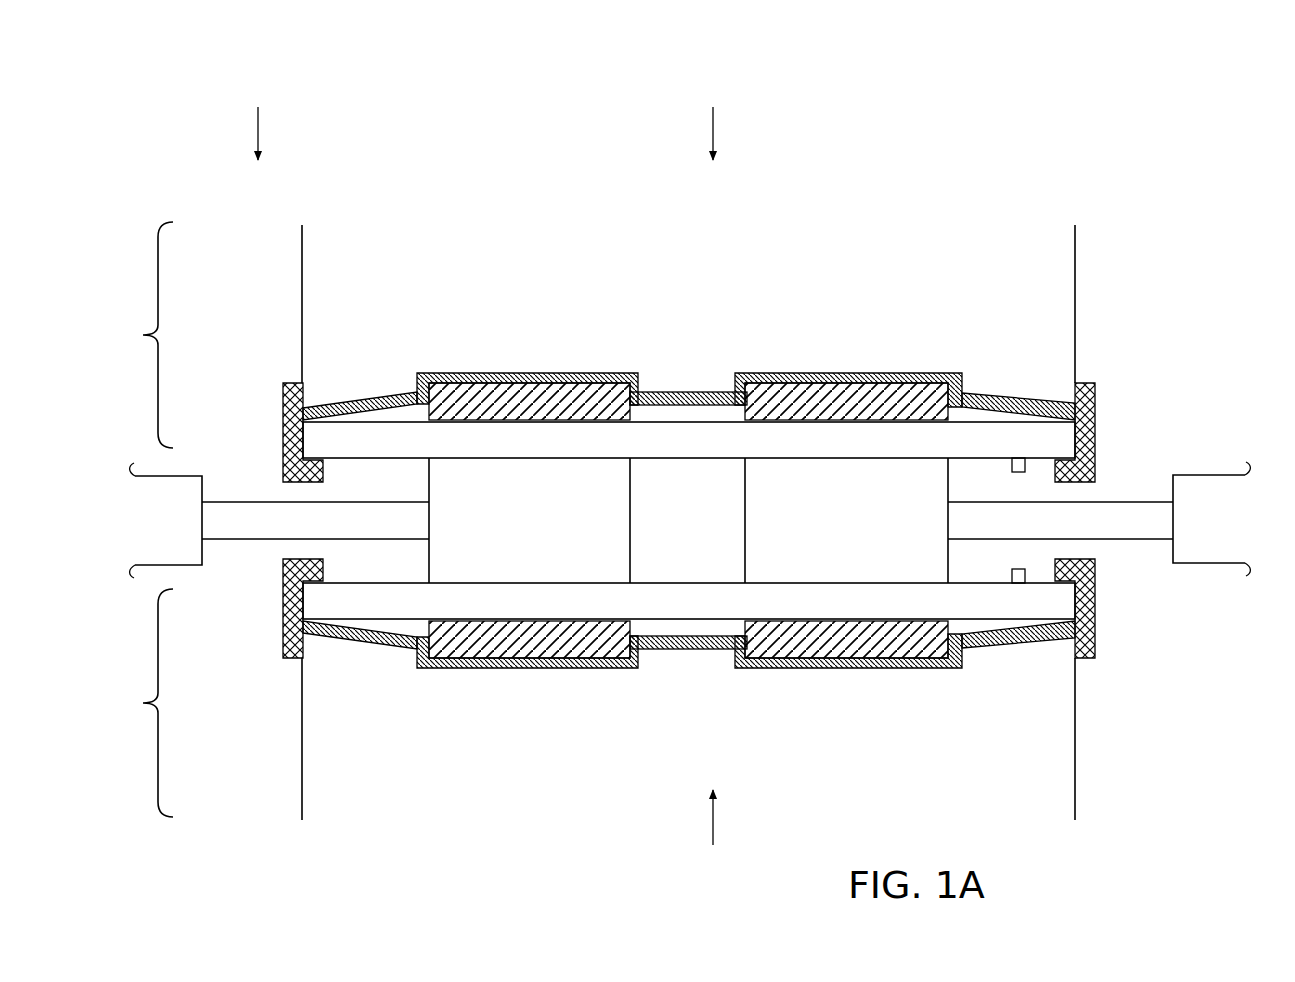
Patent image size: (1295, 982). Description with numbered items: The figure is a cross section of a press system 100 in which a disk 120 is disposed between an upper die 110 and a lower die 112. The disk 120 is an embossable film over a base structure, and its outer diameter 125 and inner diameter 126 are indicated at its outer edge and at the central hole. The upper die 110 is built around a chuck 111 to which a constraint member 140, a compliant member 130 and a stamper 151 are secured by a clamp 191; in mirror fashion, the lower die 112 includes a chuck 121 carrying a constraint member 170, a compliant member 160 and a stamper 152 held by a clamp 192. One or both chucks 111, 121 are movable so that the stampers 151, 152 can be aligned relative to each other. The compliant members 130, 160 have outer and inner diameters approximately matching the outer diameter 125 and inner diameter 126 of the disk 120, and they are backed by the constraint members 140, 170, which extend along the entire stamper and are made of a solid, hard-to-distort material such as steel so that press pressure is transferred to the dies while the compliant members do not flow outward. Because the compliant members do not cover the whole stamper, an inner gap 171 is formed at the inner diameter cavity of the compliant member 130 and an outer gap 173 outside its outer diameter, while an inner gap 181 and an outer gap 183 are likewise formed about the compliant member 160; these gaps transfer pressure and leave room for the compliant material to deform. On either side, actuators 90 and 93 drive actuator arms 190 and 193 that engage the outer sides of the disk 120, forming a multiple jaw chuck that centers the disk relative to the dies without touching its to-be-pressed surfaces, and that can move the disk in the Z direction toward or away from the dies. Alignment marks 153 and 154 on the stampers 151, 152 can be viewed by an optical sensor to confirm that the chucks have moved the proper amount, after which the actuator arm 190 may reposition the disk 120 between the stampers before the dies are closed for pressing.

The press system 100 is at (944, 88).
The upper die 110 is at (125, 335).
The lower die 112 is at (122, 703).
The chuck 111 is at (344, 286).
The chuck 121 is at (344, 844).
The actuator 90 is at (119, 552).
The actuator 93 is at (1223, 546).
The actuator arm 190 is at (250, 505).
The actuator arm 193 is at (1133, 505).
The clamp 191 is at (1085, 382).
The clamp 192 is at (1082, 658).
The stamper 151 is at (542, 449).
The stamper 152 is at (542, 614).
The compliant member 130 is at (855, 395).
The compliant member 160 is at (513, 668).
The constraint member 140 is at (930, 372).
The constraint member 170 is at (868, 668).
The inner gap 171 is at (690, 408).
The inner gap 181 is at (688, 650).
The outer gap 173 is at (993, 360).
The outer gap 183 is at (398, 630).
The disk 120 is at (867, 543).
The outer diameter 125 is at (418, 478).
The inner diameter 126 is at (738, 472).
The alignment mark 153 is at (1012, 466).
The alignment mark 154 is at (1012, 572).